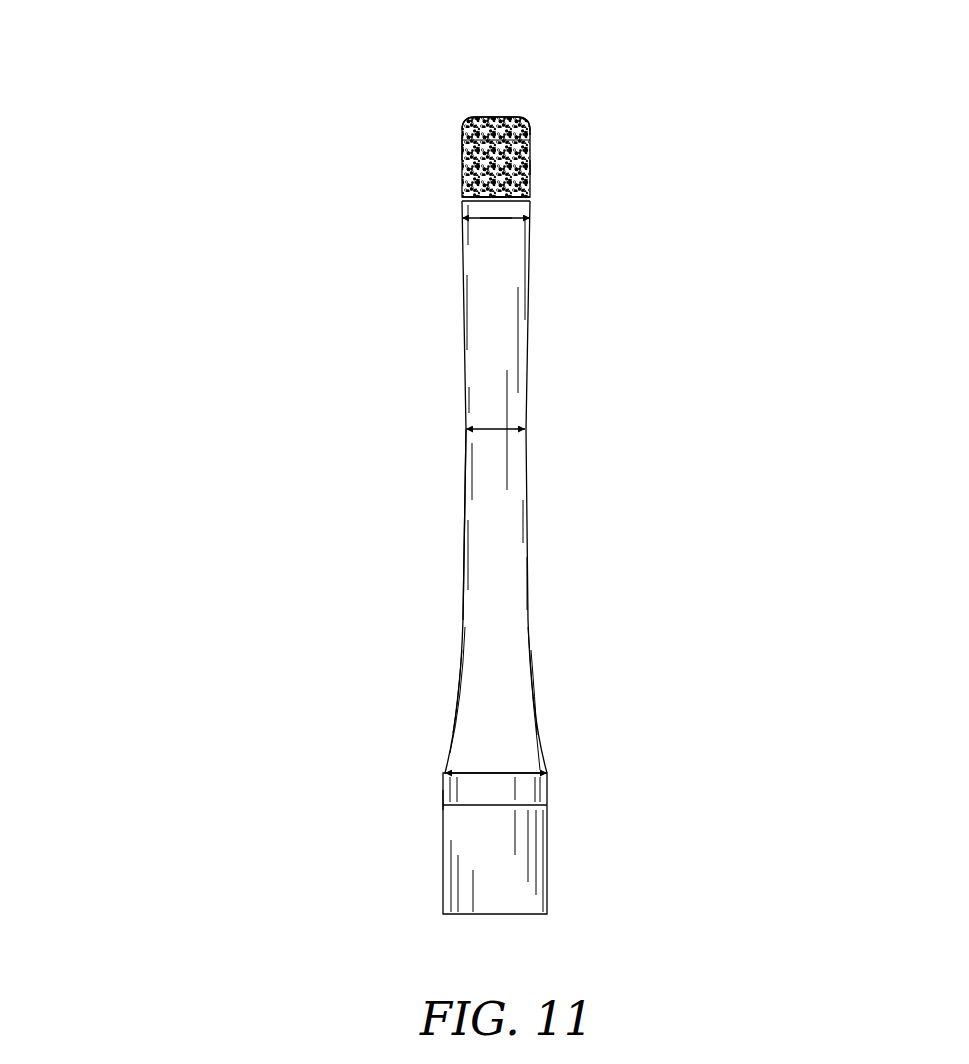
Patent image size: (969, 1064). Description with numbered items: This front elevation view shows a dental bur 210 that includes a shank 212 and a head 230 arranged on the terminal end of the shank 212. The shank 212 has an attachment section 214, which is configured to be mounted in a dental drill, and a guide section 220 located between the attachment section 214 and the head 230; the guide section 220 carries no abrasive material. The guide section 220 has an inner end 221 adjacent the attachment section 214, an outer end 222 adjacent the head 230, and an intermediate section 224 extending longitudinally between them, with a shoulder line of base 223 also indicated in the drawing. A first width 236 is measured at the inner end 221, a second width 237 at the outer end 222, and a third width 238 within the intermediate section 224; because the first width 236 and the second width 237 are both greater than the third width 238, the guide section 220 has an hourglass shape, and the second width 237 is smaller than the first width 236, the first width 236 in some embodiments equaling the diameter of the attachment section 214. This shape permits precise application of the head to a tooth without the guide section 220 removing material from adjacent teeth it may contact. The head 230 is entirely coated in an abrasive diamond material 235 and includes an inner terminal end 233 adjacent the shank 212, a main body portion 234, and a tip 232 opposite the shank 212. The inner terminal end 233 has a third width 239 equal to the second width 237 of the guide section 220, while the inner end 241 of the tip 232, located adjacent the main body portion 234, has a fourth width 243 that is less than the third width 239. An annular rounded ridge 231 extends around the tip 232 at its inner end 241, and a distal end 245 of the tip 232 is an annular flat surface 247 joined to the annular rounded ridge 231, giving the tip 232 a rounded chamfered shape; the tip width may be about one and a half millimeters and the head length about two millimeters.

The dental bur 210 is at (165, 168).
The shank 212 is at (630, 378).
The attachment section 214 is at (553, 864).
The guide section 220 is at (537, 525).
The inner end 221 is at (443, 798).
The outer end 222 is at (462, 218).
The shoulder line of base 223 is at (550, 805).
The intermediate section 224 is at (532, 407).
The head 230 is at (727, 162).
The annular rounded ridge 231 is at (530, 115).
The tip 232 is at (522, 83).
The inner terminal end 233 is at (462, 193).
The main body portion 234 is at (532, 167).
The abrasive diamond material 235 is at (462, 143).
The first width 236 is at (497, 773).
The second width 237 is at (497, 220).
The third width 238 is at (496, 428).
The third width 239 is at (507, 196).
The inner end 241 is at (532, 137).
The fourth width 243 is at (488, 138).
The distal end 245 is at (467, 116).
The annular flat surface 247 is at (494, 112).